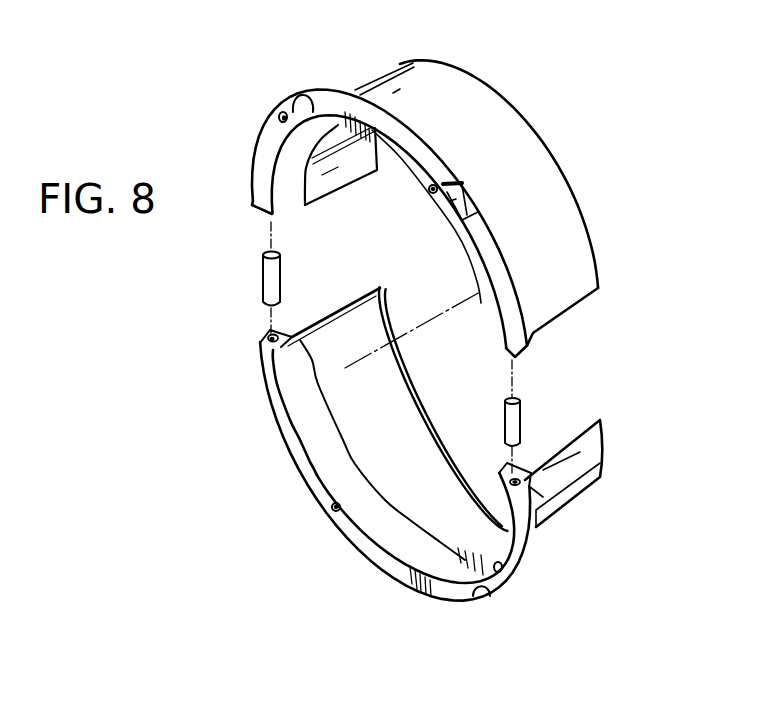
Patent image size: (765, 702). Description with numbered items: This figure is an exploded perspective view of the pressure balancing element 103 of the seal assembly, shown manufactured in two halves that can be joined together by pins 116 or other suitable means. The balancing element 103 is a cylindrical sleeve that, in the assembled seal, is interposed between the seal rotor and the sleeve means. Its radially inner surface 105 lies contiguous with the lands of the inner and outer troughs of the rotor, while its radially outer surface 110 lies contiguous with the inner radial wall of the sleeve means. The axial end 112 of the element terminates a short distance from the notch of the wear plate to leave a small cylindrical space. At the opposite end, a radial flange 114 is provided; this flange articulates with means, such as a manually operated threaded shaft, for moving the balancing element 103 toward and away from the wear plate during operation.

The pressure balancing element 103 is at (436, 318).
The radially outer surface 110 is at (510, 123).
The radially inner surface 105 is at (337, 178).
The radial flange 114 is at (270, 383).
The axial end 112 is at (592, 420).
The pins 116 is at (263, 270).